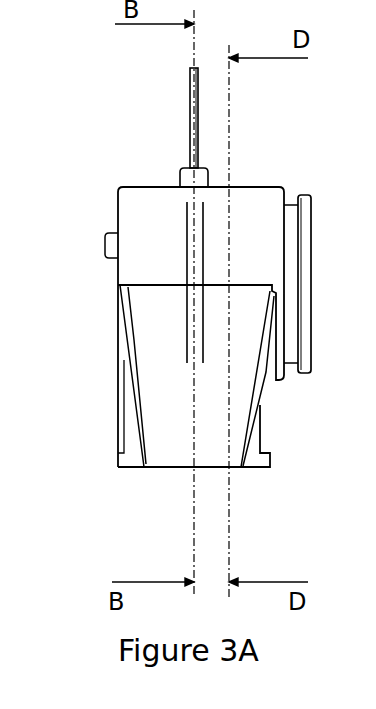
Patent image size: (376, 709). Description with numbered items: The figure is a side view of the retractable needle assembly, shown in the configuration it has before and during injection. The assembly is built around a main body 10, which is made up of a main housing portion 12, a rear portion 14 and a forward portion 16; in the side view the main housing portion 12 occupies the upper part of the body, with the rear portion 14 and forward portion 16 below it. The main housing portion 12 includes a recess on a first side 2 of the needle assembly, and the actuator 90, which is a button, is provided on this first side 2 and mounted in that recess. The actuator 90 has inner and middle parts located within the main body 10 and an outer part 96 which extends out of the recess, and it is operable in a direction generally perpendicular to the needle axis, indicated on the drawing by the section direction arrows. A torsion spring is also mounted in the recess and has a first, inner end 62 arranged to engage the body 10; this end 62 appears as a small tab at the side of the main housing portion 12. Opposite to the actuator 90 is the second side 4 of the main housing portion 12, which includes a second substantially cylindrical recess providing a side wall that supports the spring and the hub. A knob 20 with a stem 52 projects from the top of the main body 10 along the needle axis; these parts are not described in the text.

The first side 2 is at (320, 224).
The second side 4 is at (108, 208).
The main body 10 is at (112, 375).
The main housing portion 12 is at (157, 308).
The rear portion 14 is at (177, 453).
The forward portion 16 is at (236, 210).
The knob 20 is at (180, 184).
The stem 52 is at (190, 75).
The first end 62 is at (108, 253).
The actuator 90 is at (304, 384).
The outer part 96 is at (311, 304).